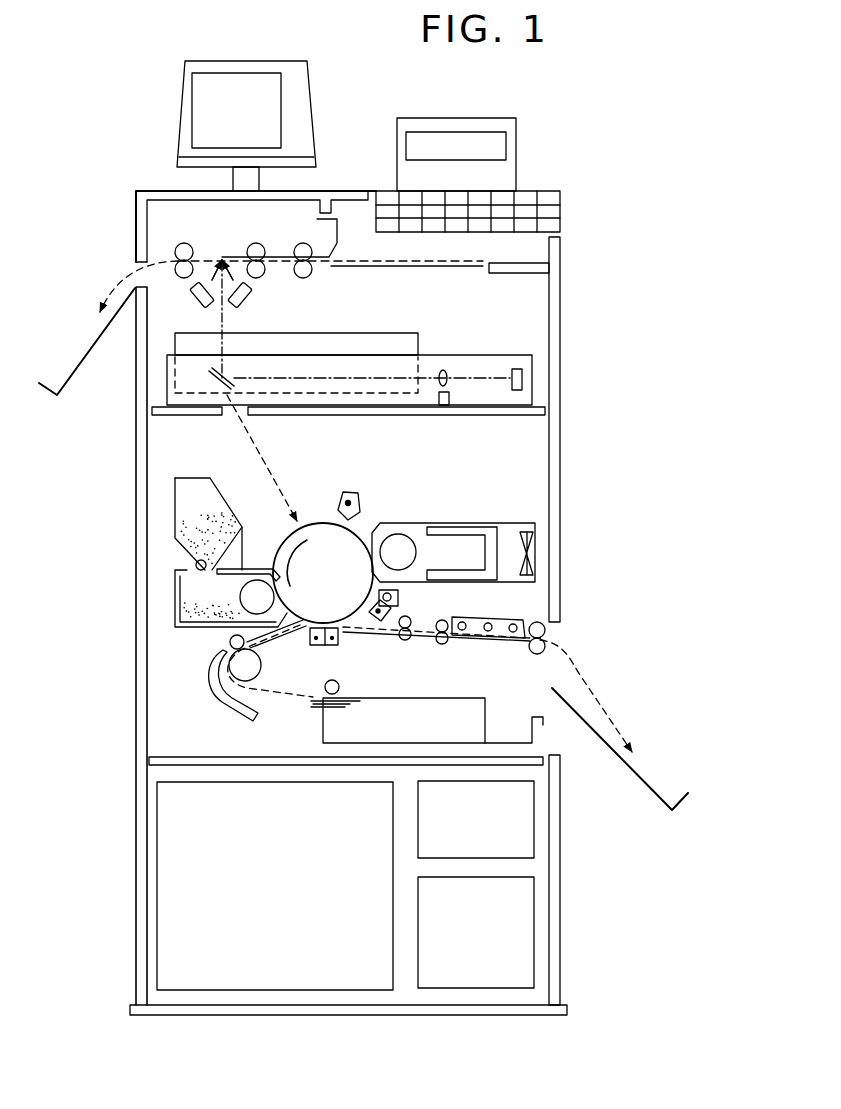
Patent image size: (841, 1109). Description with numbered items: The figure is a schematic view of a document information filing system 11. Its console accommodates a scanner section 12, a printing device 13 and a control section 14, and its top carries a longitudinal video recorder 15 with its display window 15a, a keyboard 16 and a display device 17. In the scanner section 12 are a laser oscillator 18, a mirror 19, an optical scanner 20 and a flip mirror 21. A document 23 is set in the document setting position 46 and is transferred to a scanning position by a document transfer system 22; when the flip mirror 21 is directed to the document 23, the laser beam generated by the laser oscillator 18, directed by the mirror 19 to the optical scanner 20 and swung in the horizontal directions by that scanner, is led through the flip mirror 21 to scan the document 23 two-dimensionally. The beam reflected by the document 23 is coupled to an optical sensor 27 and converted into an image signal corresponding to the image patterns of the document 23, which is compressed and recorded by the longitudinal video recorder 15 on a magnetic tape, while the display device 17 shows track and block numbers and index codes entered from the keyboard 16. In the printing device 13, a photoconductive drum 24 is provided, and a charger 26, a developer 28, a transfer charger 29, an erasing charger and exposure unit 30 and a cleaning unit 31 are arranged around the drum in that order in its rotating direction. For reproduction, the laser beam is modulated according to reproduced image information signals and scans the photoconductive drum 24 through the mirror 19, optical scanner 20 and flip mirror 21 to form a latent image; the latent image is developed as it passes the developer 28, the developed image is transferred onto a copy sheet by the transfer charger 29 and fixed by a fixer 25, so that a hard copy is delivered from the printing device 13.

The document information filing system 11 is at (97, 638).
The scanner section 12 is at (533, 350).
The printing device 13 is at (533, 490).
The control section 14 is at (533, 867).
The longitudinal video recorder (LVR) 15 is at (518, 132).
The display window 15a is at (500, 152).
The keyboard 16 is at (560, 197).
The display device 17 is at (312, 78).
The laser oscillator 18 is at (365, 332).
The mirror 19 is at (516, 368).
The optical scanner 20 is at (447, 368).
The flip mirror 21 is at (236, 372).
The document transfer system 22 is at (220, 247).
The document 23 is at (212, 258).
The photoconductive drum 24 is at (281, 550).
The fixer 25 is at (487, 615).
The charger 26 is at (352, 490).
The optical sensor 27 is at (250, 295).
The developer 28 is at (187, 630).
The transfer charger 29 is at (337, 645).
The erasing charger and exposure unit 30 is at (402, 597).
The cleaning unit 31 is at (446, 521).
The document setting position 46 is at (435, 265).